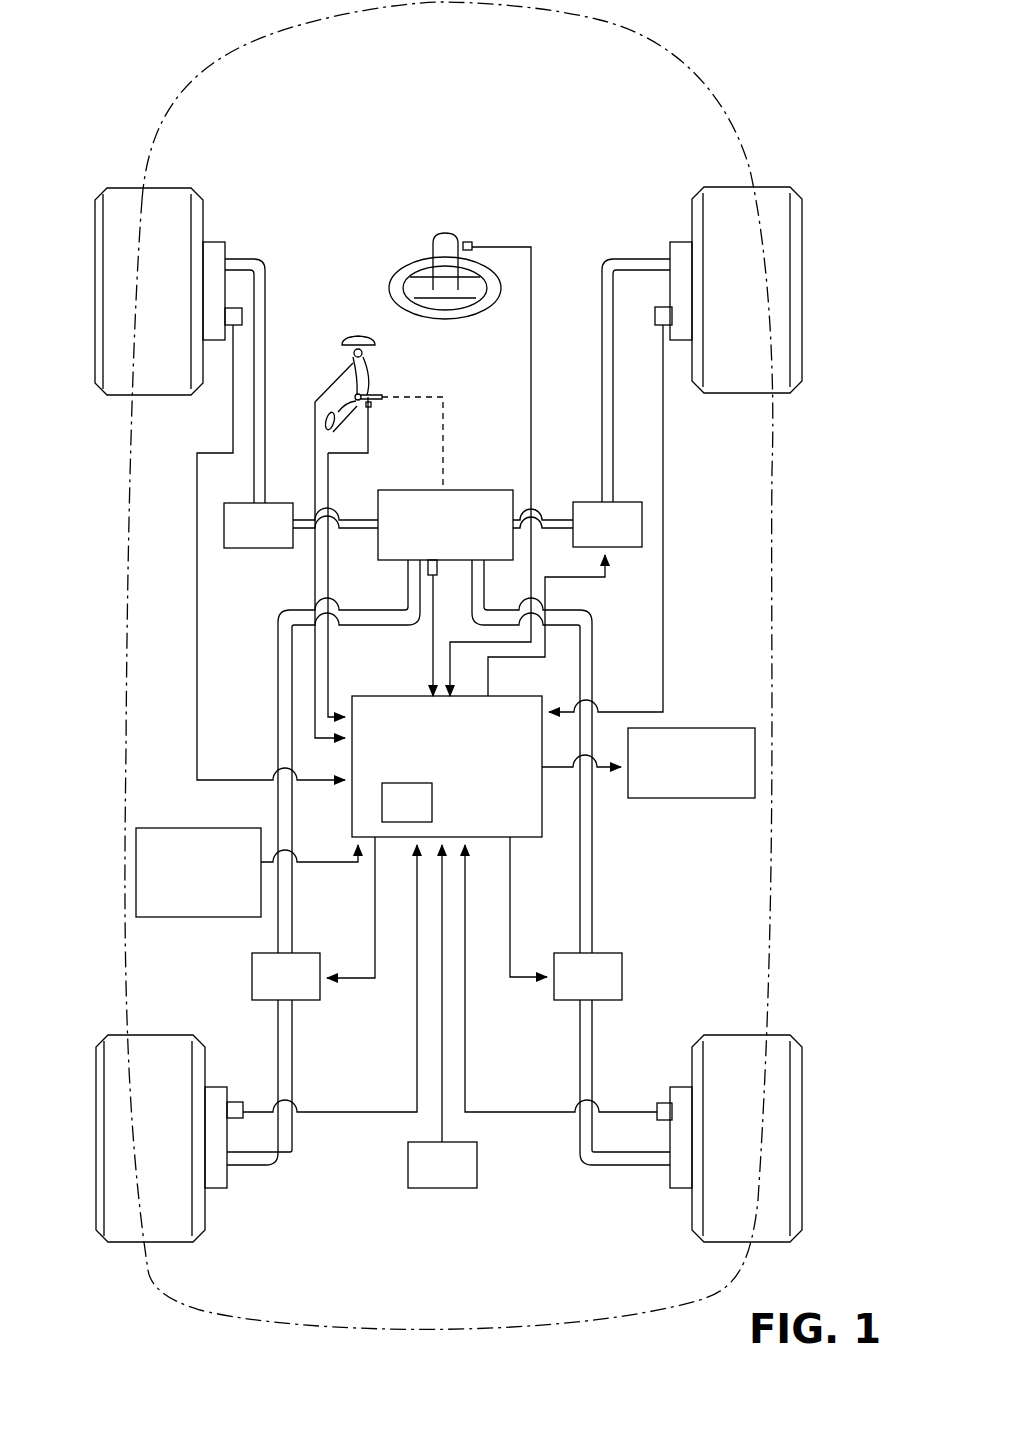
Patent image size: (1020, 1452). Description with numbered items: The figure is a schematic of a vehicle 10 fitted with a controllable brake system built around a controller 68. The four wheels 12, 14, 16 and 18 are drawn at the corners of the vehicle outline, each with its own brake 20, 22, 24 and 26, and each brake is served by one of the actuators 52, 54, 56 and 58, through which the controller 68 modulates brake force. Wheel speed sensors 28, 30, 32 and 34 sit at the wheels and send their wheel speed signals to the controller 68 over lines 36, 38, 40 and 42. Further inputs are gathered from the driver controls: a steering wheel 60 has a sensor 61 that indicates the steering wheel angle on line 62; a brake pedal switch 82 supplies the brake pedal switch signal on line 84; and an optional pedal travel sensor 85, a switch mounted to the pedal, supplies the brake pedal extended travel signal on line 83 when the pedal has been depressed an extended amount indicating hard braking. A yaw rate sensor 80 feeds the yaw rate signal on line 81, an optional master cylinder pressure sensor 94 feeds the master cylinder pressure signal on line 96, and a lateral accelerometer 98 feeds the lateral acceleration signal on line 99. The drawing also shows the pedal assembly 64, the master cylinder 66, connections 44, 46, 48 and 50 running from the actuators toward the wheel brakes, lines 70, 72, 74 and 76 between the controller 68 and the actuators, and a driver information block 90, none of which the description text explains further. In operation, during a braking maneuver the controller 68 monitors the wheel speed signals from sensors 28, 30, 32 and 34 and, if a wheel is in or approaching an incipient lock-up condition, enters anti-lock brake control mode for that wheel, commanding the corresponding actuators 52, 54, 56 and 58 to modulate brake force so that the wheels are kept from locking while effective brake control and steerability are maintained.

The vehicle 10 is at (700, 50).
The wheel 12 is at (120, 205).
The wheel 14 is at (780, 200).
The wheel 16 is at (125, 1230).
The wheel 18 is at (780, 1055).
The brake 20 is at (214, 248).
The brake 22 is at (680, 247).
The brake 24 is at (216, 1180).
The brake 26 is at (684, 1180).
The wheel speed sensor 28 is at (240, 315).
The wheel speed sensor 30 is at (658, 315).
The wheel speed sensor 32 is at (237, 1103).
The wheel speed sensor 34 is at (663, 1104).
The line 36 is at (197, 528).
The line 38 is at (665, 470).
The line 40 is at (350, 1113).
The line 42 is at (525, 1113).
The left front brake line 44 is at (256, 268).
The right front brake line 46 is at (606, 392).
The left rear brake line 48 is at (291, 1034).
The right rear brake line 50 is at (581, 1040).
The actuator 52 is at (225, 540).
The actuator 54 is at (643, 521).
The actuator 56 is at (255, 977).
The actuator 58 is at (622, 970).
The steering wheel 60 is at (432, 264).
The steering wheel angle sensor 61 is at (470, 242).
The line 62 is at (531, 246).
The brake pedal 64 is at (337, 408).
The master cylinder 66 is at (501, 492).
The controller 68 is at (522, 828).
The left front actuator brake line 70 is at (252, 611).
The right front actuator brake line 72 is at (583, 578).
The left rear actuator control line 74 is at (377, 935).
The right rear actuator control line 76 is at (509, 932).
The yaw rate sensor 80 is at (158, 829).
The line 81 is at (343, 868).
The brake pedal switch 82 is at (371, 407).
The line 83 is at (313, 450).
The line 84 is at (330, 651).
The pedal travel sensor 85 is at (352, 358).
The driver information display 90 is at (720, 729).
The master cylinder pressure sensor 94 is at (437, 576).
The line 96 is at (429, 656).
The lateral accelerometer 98 is at (445, 1189).
The line 99 is at (441, 1120).